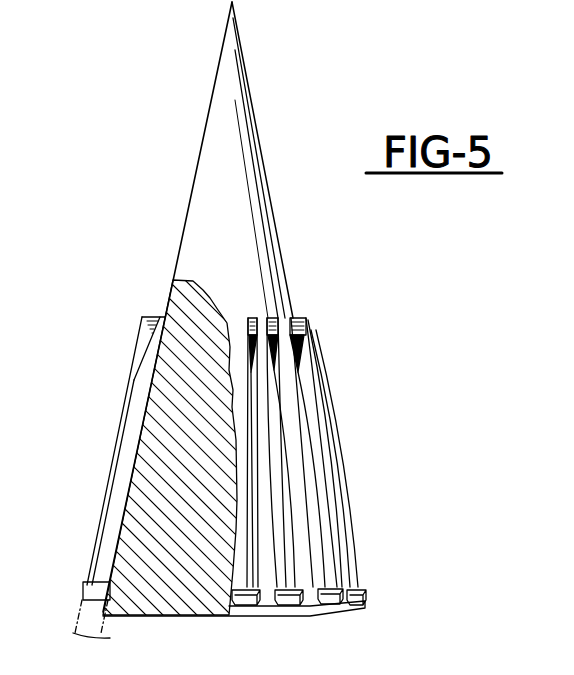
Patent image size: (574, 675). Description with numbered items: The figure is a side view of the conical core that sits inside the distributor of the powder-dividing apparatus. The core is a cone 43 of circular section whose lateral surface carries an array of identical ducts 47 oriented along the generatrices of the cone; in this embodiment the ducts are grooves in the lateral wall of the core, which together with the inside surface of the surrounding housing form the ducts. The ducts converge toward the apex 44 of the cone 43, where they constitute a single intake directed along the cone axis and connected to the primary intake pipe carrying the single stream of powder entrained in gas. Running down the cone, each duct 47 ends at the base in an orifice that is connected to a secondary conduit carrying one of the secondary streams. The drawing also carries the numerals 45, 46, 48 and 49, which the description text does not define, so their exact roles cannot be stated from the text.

The cone 43 is at (208, 157).
The apex 44 is at (232, 44).
The feet 45 is at (350, 572).
The prongs 46 is at (327, 506).
The duct 47 is at (124, 454).
The tabs 48 is at (150, 317).
The phantom position of arm 49 is at (85, 615).